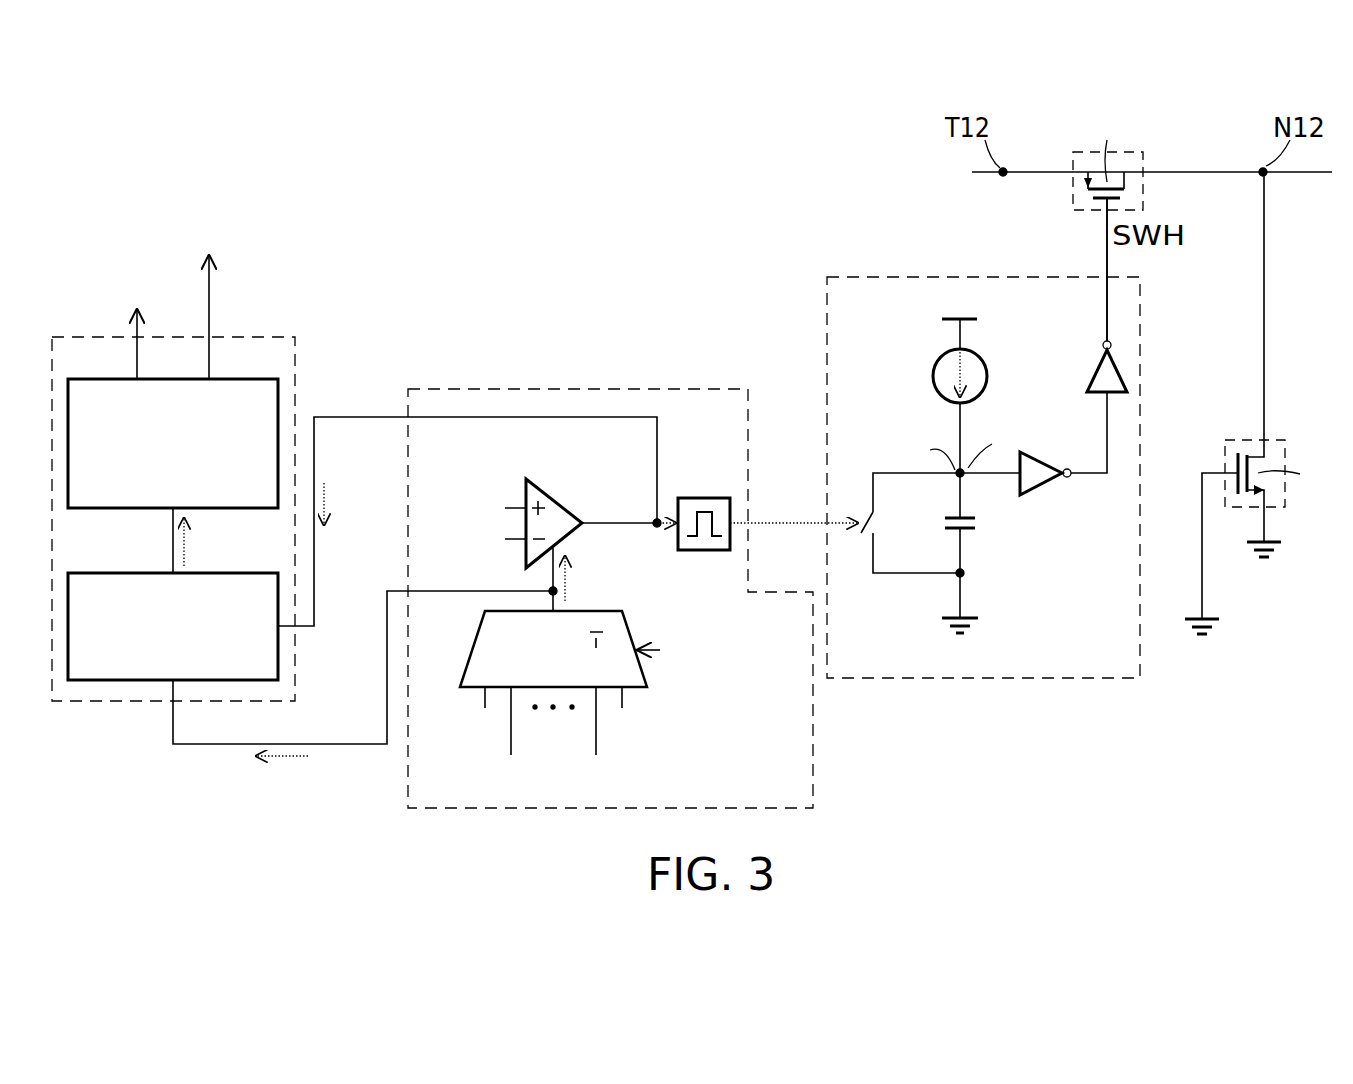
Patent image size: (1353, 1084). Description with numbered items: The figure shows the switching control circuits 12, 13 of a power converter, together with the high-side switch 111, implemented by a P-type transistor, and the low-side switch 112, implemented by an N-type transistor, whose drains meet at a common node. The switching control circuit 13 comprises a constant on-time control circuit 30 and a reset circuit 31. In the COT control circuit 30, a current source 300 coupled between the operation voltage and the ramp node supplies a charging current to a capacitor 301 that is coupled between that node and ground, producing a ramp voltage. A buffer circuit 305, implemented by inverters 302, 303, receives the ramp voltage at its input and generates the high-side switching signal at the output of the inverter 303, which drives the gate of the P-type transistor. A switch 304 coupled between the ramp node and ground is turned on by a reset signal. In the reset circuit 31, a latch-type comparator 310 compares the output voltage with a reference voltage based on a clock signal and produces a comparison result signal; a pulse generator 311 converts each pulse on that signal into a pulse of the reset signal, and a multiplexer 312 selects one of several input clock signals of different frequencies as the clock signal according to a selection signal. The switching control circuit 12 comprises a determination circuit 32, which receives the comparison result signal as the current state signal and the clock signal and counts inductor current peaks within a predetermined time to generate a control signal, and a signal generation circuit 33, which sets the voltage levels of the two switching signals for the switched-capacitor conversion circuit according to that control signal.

The switching control circuit 12 is at (248, 337).
The switching control circuit 13 is at (612, 318).
The constant on-time (COT) control circuit 30 is at (829, 279).
The reset circuit 31 is at (410, 392).
The determination circuit 32 is at (69, 573).
The signal generation circuit 33 is at (69, 379).
The high-side switch 111 is at (1073, 160).
The low-side switch 112 is at (1280, 440).
The current source 300 is at (935, 362).
The capacitor 301 is at (978, 522).
The inverter 302 is at (1043, 458).
The inverter 303 is at (1085, 380).
The switch 304 is at (878, 524).
The buffer circuit 305 is at (1072, 514).
The latch-type comparator 310 is at (556, 490).
The pulse generator 311 is at (703, 496).
The multiplexer 312 is at (634, 626).